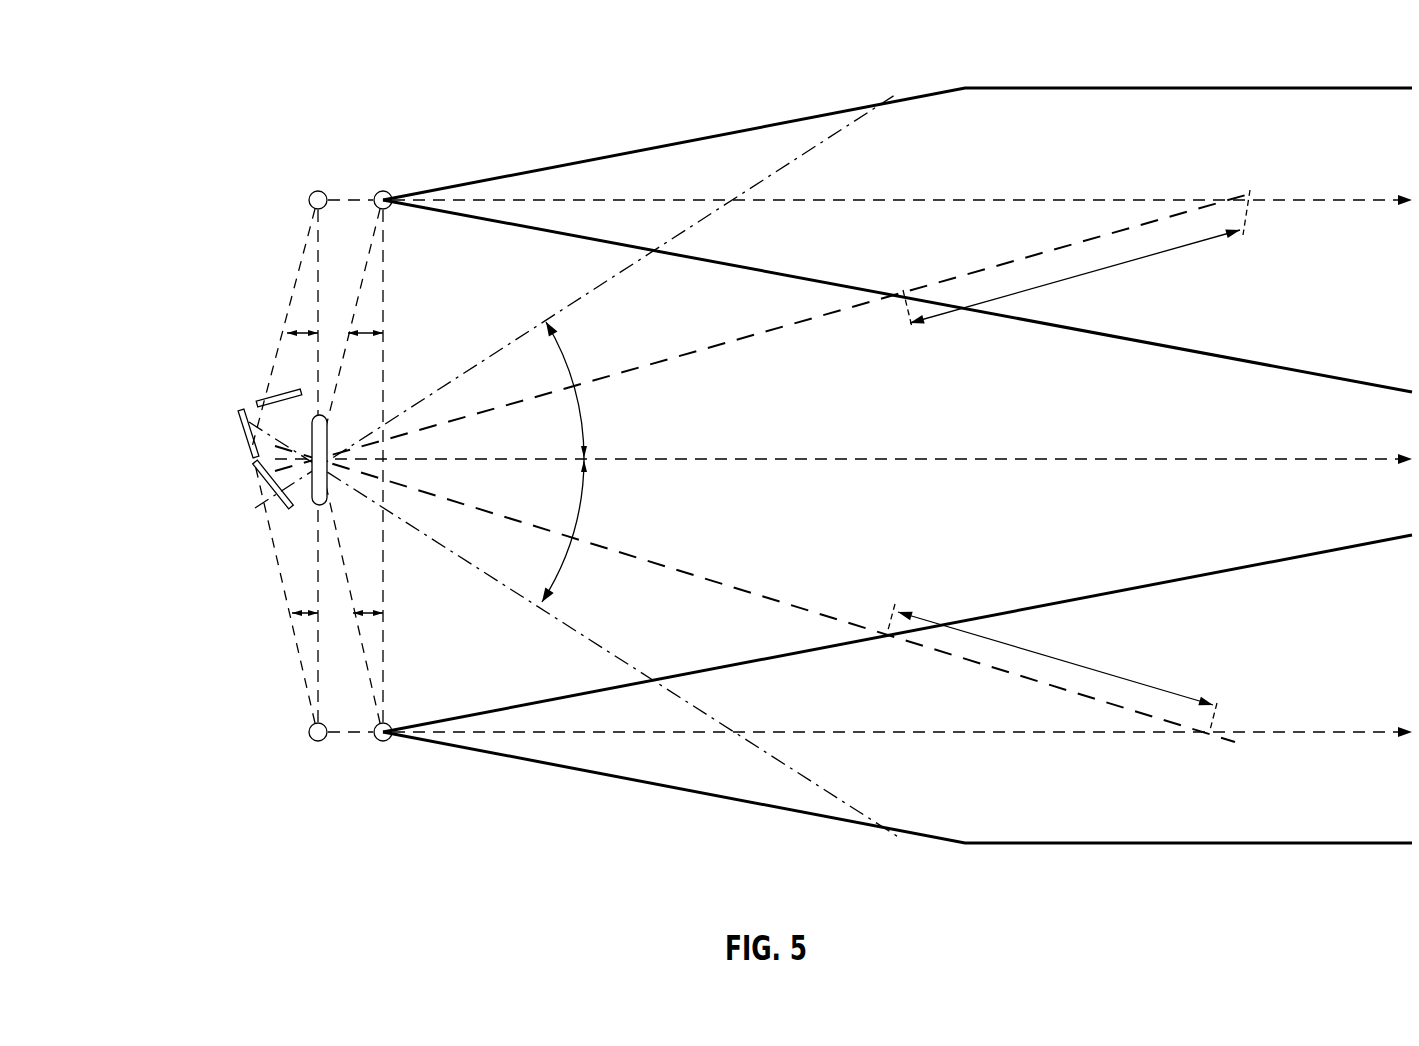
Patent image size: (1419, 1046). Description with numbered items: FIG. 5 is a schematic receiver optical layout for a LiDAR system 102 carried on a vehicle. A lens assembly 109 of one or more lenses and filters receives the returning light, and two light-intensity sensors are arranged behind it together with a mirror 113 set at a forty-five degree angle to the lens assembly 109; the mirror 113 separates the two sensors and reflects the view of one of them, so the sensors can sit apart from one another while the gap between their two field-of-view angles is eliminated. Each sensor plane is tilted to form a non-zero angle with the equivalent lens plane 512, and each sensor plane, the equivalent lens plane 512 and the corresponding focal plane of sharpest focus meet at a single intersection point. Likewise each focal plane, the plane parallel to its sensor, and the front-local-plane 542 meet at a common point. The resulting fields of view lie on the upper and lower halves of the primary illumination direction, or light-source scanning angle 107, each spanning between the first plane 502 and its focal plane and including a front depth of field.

The LiDAR system 102 is at (131, 79).
The lens assembly 109 is at (312, 445).
The mirror 113 is at (266, 482).
The primary illumination direction 107 is at (1160, 817).
The first plane 502 is at (1298, 458).
The equivalent lens plane 512 is at (313, 234).
The front-local-plane 542 is at (385, 290).